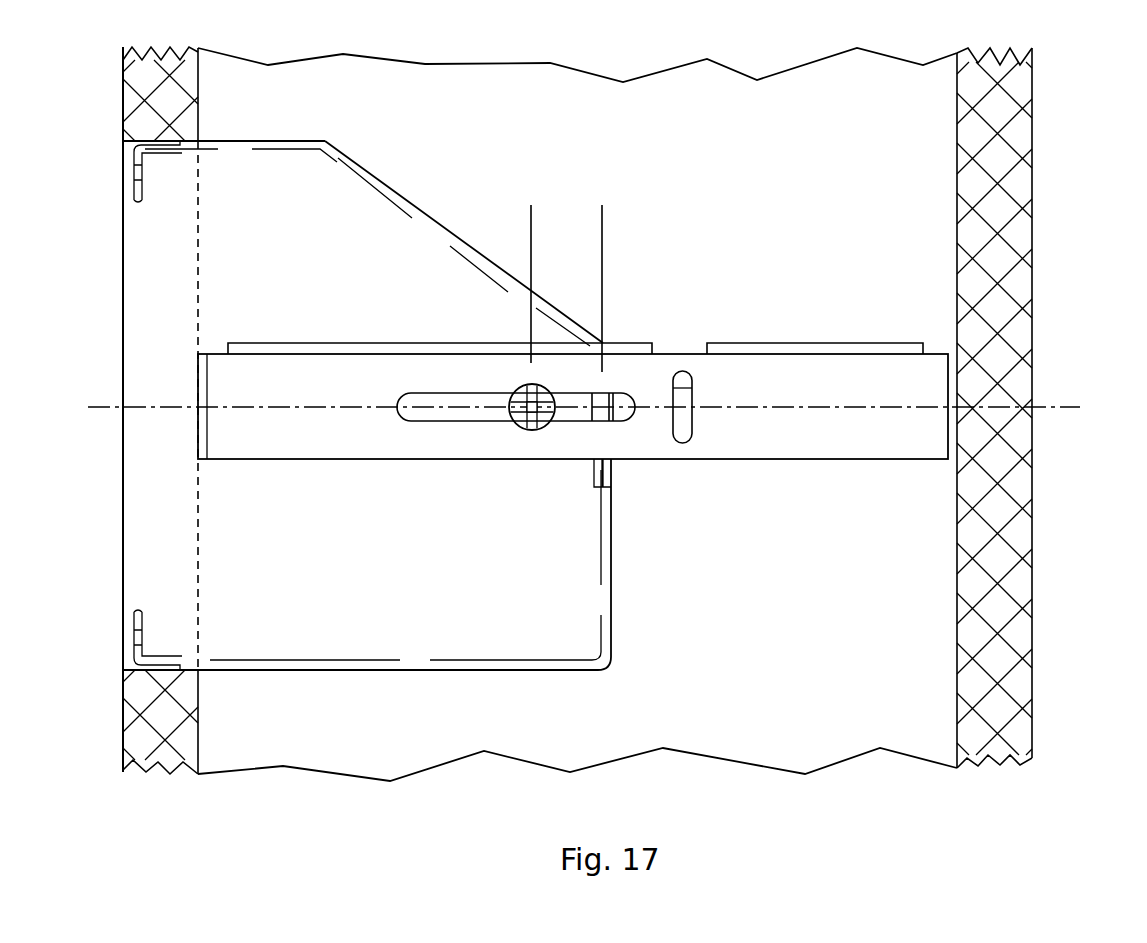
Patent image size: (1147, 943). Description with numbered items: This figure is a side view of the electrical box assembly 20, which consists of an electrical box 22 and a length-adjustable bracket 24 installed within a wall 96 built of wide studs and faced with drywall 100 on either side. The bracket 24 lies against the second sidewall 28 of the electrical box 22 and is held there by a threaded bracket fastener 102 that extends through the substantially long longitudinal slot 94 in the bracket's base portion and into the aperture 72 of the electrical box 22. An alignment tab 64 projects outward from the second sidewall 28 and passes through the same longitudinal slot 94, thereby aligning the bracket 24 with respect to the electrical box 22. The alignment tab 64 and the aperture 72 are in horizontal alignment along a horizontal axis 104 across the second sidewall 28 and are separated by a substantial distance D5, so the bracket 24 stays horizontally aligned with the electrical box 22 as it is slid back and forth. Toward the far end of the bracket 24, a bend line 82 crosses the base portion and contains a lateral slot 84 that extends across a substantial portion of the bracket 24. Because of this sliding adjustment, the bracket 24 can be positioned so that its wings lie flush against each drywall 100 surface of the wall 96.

The electrical box assembly 20 is at (738, 224).
The electrical box 22 is at (410, 200).
The length-adjustable bracket 24 is at (820, 462).
The second sidewall 28 is at (367, 405).
The alignment tab 64 is at (598, 423).
The aperture 72 is at (510, 398).
The bend line 82 is at (681, 443).
The lateral slot 84 is at (682, 388).
The longitudinal slot 94 is at (462, 415).
The wall 96 is at (122, 94).
The drywall 100 is at (200, 237).
The threaded bracket fastener 102 is at (532, 430).
The horizontal axis 104 is at (144, 408).
The distance D5 is at (478, 240).